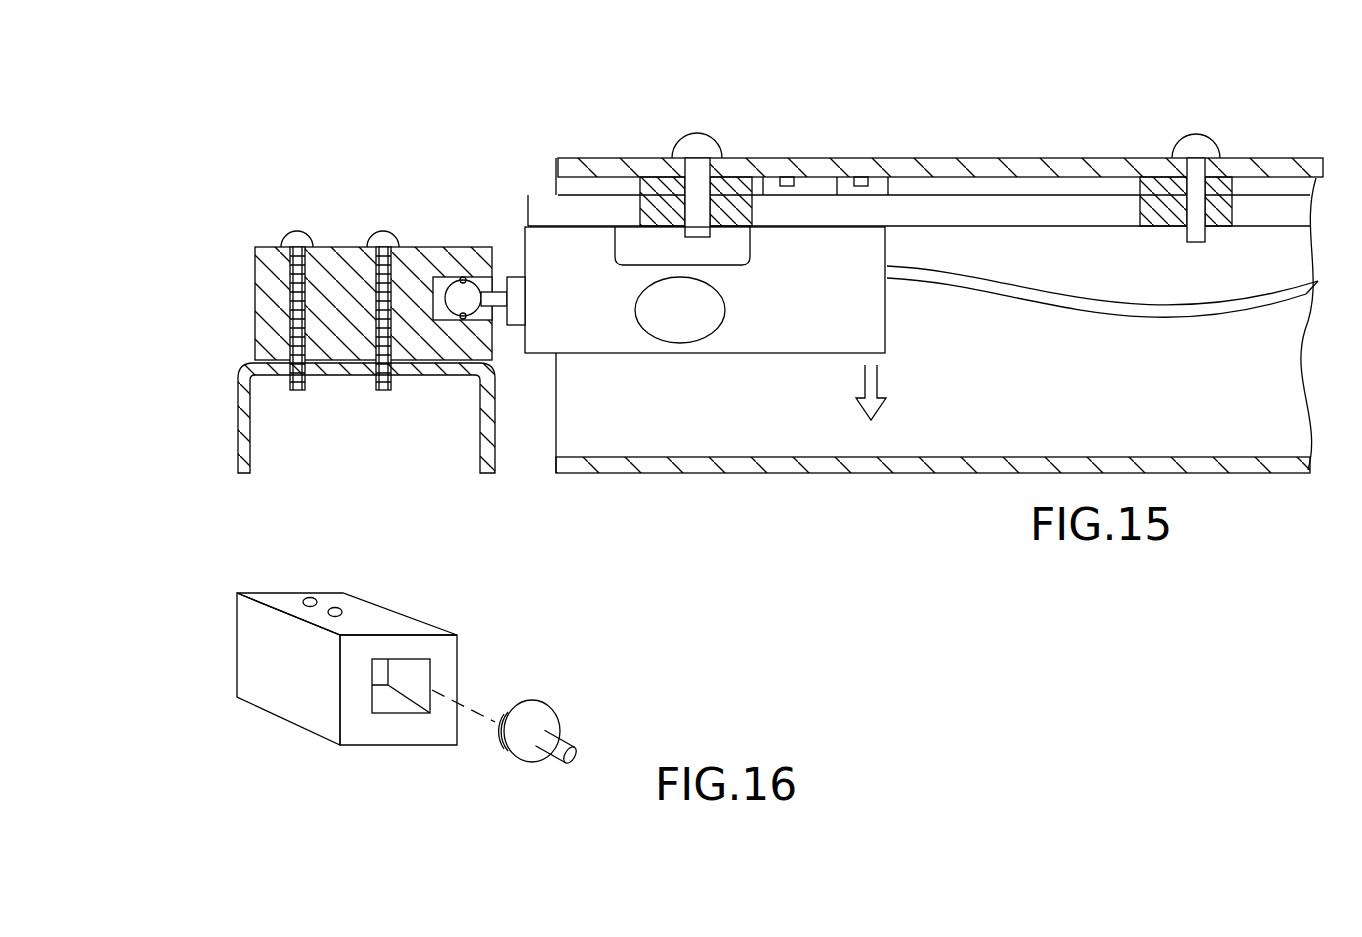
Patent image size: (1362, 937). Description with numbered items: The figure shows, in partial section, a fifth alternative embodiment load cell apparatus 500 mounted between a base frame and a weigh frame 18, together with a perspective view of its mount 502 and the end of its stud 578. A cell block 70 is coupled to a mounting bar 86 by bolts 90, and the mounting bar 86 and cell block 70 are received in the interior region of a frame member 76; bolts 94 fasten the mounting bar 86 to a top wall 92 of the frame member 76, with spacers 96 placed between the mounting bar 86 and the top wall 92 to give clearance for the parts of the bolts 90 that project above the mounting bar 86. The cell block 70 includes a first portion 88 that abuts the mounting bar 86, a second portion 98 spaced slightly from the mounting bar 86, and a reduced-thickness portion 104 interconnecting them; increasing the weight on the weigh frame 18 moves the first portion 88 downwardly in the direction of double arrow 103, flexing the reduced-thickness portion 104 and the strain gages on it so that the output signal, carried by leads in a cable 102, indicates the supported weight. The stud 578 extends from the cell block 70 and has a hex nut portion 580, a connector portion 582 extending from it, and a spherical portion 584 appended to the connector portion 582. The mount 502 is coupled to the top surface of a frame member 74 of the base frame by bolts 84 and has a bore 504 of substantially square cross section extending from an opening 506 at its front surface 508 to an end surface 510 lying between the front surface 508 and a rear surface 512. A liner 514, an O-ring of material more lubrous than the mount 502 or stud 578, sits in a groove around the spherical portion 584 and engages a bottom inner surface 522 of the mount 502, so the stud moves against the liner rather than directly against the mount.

In FIG. 15, the weigh frame 18 is at (1268, 90).
In FIG. 15, the cell block 70 is at (722, 370).
In FIG. 15, the frame member 74 is at (243, 420).
In FIG. 15, the frame member 76 is at (1262, 410).
In FIG. 15, the bolts 84 is at (290, 320).
In FIG. 15, the mounting bar 86 is at (995, 215).
In FIG. 15, the first portion 88 is at (852, 238).
In FIG. 15, the bolts 90 is at (847, 187).
In FIG. 15, the top wall 92 is at (1277, 158).
In FIG. 15, the bolts 94 is at (697, 156).
In FIG. 15, the spacers 96 is at (655, 200).
In FIG. 15, the second portion 98 is at (583, 245).
In FIG. 15, the cable 102 is at (1158, 323).
In FIG. 15, the double arrow 103 is at (877, 380).
In FIG. 15, the reduced-thickness portion 104 is at (740, 306).
In FIG. 15, the load cell apparatus 500 is at (287, 153).
In FIG. 15, the mount 502 is at (338, 245).
In FIG. 16, the mount 502 is at (265, 663).
In FIG. 16, the bore 504 is at (432, 668).
In FIG. 16, the opening 506 is at (418, 660).
In FIG. 16, the front surface 508 is at (448, 690).
In FIG. 16, the end surface 510 is at (380, 672).
In FIG. 15, the rear surface 512 is at (255, 266).
In FIG. 15, the liner 514 is at (470, 335).
In FIG. 16, the liner 514 is at (502, 743).
In FIG. 15, the bottom inner surface 522 is at (415, 255).
In FIG. 16, the bottom inner surface 522 is at (388, 705).
In FIG. 15, the stud 578 is at (512, 348).
In FIG. 16, the stud 578 is at (593, 742).
In FIG. 15, the hex nut portion 580 is at (512, 277).
In FIG. 15, the connector portion 582 is at (500, 290).
In FIG. 16, the connector portion 582 is at (553, 758).
In FIG. 15, the spherical portion 584 is at (461, 295).
In FIG. 16, the spherical portion 584 is at (565, 718).